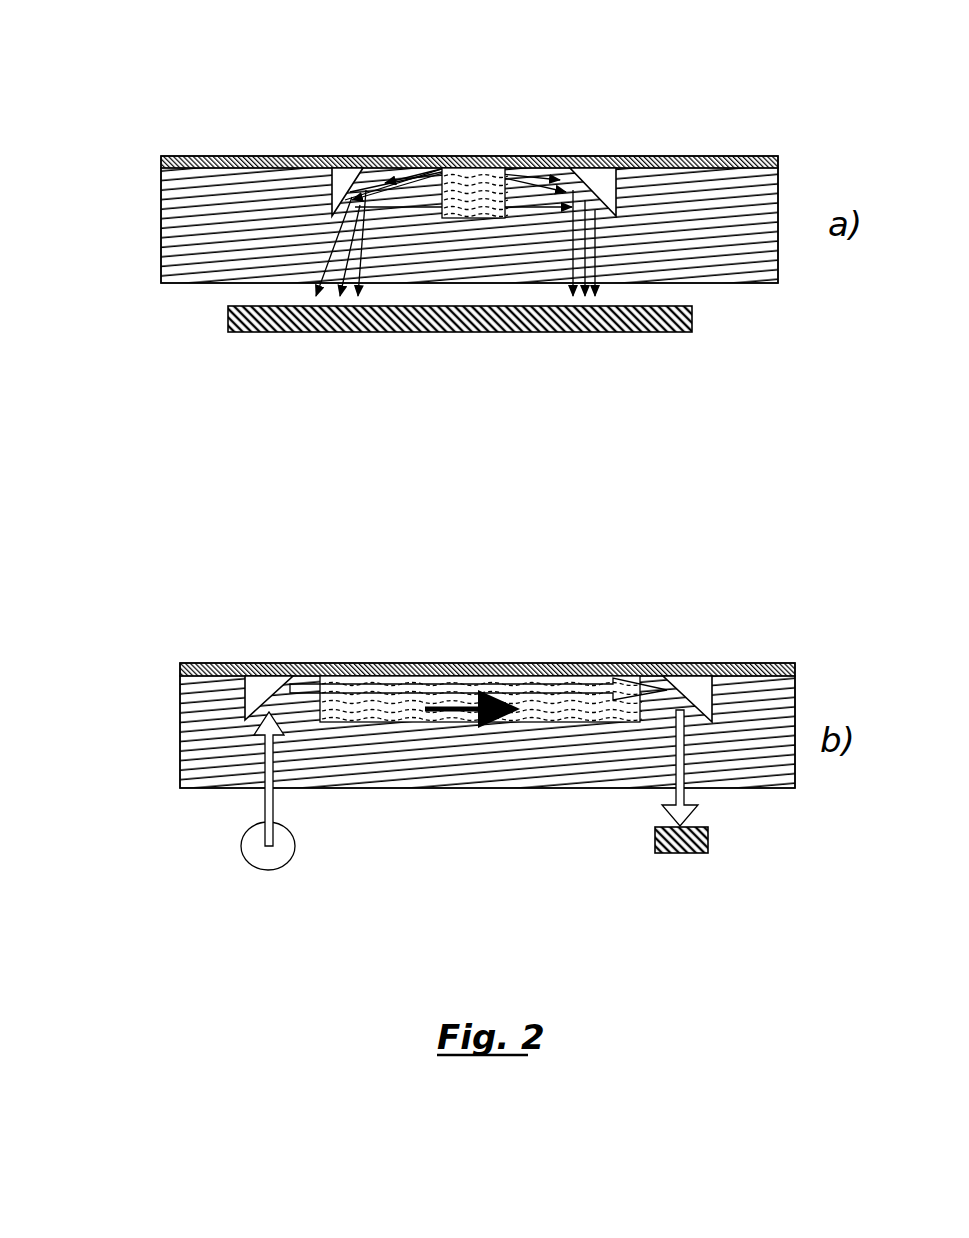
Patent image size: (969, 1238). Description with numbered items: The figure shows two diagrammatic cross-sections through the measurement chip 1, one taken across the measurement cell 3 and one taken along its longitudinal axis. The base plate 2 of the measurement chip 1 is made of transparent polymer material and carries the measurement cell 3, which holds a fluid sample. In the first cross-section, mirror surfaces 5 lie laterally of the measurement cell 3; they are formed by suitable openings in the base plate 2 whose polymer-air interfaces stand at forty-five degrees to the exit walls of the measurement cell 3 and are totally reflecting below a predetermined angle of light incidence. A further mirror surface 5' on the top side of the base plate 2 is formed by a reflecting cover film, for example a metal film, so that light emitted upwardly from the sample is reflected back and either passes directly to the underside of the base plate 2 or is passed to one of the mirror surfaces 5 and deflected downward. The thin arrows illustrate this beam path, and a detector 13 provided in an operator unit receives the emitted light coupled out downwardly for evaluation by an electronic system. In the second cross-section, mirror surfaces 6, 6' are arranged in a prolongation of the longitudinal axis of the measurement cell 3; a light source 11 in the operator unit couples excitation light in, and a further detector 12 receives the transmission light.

The measurement chip 1 is at (178, 108).
The base plate 2 is at (250, 208).
The measurement cell 3 is at (470, 185).
The mirror surfaces 5 is at (475, 166).
The further mirror surface 5' is at (523, 110).
The mirror surface 6 is at (260, 635).
The mirror surface 6' is at (694, 634).
The light source 11 is at (265, 862).
The further detector 12 is at (677, 845).
The detector 13 is at (318, 318).